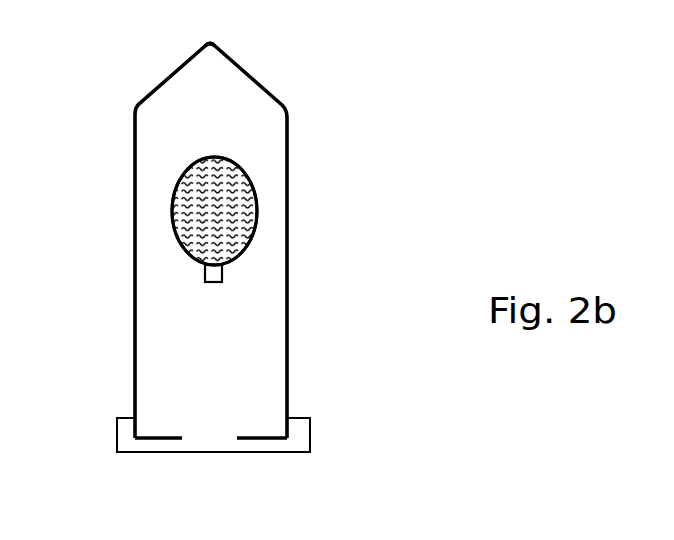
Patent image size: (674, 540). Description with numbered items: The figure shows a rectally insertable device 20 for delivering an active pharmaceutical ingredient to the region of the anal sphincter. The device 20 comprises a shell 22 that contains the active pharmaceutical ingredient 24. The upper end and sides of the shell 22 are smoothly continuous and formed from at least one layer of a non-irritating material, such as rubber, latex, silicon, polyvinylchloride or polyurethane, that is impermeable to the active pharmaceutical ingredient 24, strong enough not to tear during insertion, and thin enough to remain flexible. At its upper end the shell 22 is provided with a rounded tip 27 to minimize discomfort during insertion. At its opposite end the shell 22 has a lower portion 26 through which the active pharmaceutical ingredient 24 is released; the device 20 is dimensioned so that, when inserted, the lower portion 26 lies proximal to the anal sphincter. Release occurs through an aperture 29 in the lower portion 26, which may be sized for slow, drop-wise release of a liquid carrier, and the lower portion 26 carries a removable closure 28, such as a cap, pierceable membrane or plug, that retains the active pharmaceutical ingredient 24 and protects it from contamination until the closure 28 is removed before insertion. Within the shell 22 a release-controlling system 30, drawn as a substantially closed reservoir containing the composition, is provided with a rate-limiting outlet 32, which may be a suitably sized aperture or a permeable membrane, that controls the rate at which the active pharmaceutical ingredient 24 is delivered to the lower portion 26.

The rectally insertable device 20 is at (414, 111).
The shell 22 is at (288, 286).
The active pharmaceutical ingredient 24 is at (252, 182).
The lower portion 26 is at (326, 396).
The rounded tip 27 is at (213, 48).
The removable closure 28 is at (160, 458).
The aperture 29 is at (207, 436).
The release-controlling system 30 is at (188, 178).
The rate-limiting outlet 32 is at (204, 272).